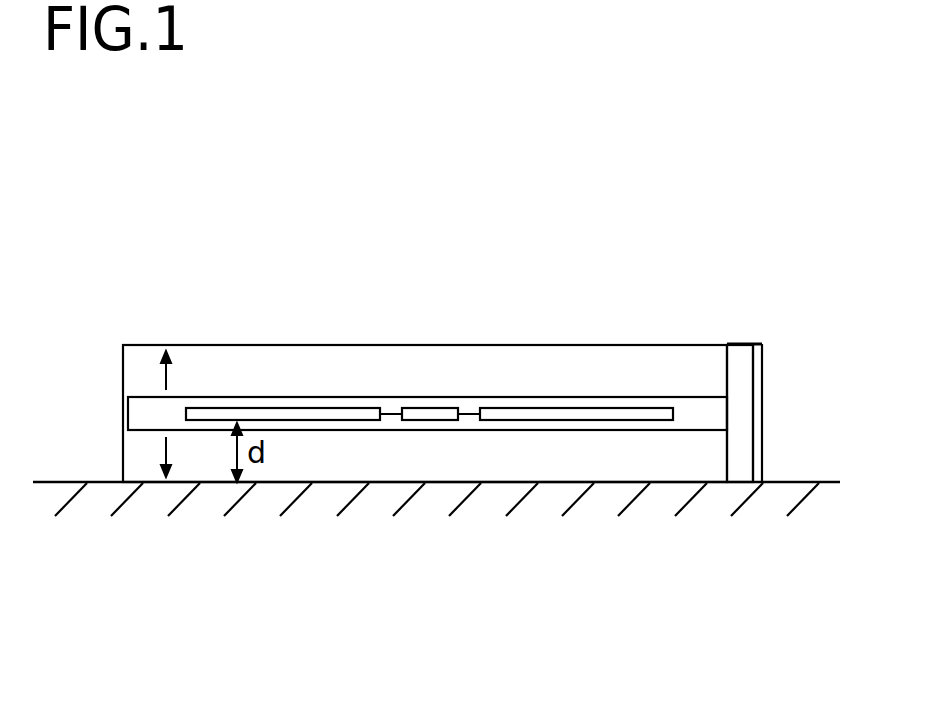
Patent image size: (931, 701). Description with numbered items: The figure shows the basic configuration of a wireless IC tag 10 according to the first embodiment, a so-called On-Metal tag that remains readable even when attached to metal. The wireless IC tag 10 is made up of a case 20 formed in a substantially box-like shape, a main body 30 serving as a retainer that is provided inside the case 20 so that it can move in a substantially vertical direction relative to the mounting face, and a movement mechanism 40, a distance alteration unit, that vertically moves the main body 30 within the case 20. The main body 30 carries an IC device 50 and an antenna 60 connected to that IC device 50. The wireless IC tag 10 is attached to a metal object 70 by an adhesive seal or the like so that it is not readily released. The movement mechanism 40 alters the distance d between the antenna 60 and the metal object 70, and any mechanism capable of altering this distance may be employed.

The wireless IC tag 10 is at (566, 212).
The case 20 is at (763, 382).
The main body 30 is at (123, 407).
The movement mechanism 40 is at (747, 457).
The IC device 50 is at (430, 408).
The antenna 60 is at (285, 408).
The metal object 70 is at (438, 668).